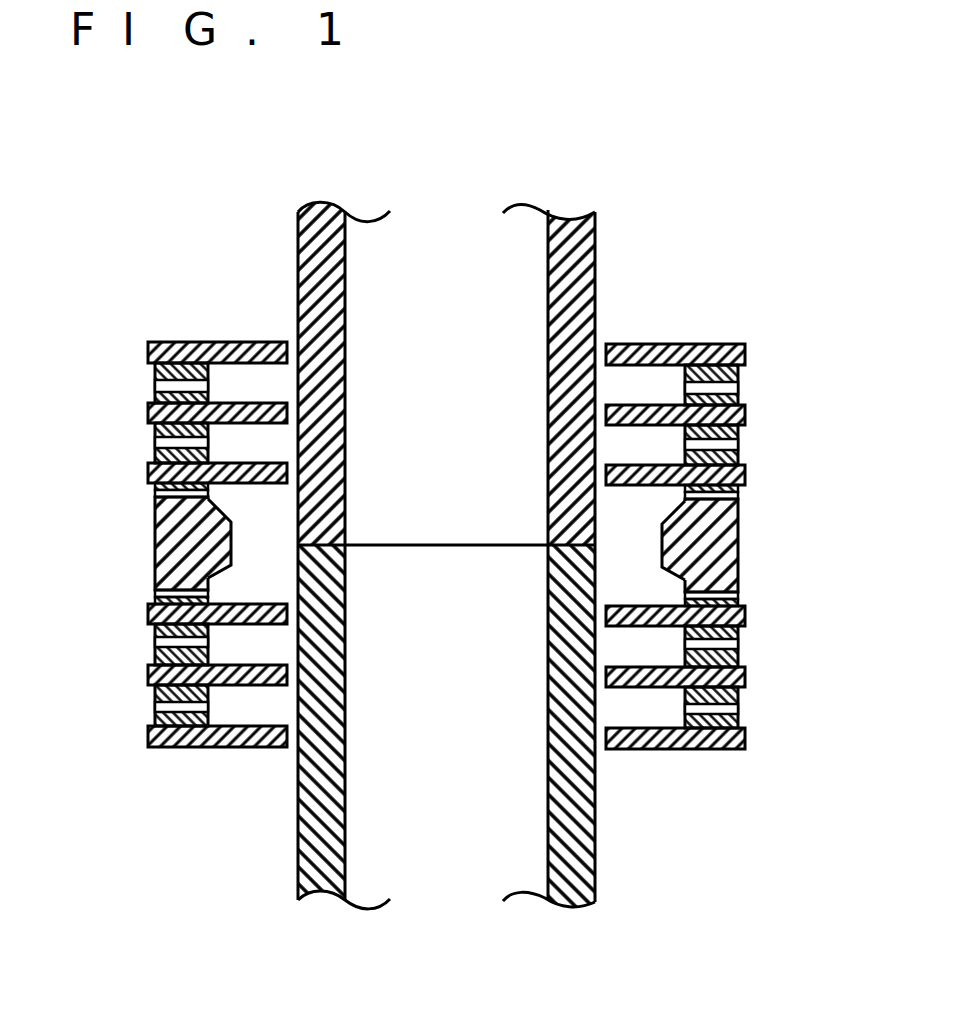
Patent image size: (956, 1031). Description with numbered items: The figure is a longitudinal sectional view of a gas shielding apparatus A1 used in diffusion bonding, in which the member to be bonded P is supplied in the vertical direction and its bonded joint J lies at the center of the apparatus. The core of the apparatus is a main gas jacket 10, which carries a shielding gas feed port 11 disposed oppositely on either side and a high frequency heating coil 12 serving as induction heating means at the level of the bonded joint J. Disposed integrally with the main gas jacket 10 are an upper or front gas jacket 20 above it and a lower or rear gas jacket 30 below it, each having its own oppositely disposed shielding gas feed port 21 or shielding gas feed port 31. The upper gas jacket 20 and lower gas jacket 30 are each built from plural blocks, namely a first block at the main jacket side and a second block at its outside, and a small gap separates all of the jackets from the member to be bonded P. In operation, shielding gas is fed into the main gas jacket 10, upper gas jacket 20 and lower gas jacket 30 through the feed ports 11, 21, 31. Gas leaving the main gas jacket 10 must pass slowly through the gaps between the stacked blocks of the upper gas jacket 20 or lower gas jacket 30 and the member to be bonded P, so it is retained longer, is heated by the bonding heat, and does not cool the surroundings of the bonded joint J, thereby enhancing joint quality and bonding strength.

The gas shielding apparatus A1 is at (750, 308).
The member to be bonded P is at (595, 278).
The bonded joint J is at (437, 547).
The main gas jacket 10 is at (416, 544).
The shielding gas feed port 11 is at (155, 492).
The high frequency heating coil 12 is at (155, 548).
The upper gas jacket 20 is at (477, 413).
The shielding gas feed port 21 is at (155, 385).
The lower gas jacket 30 is at (480, 676).
The shielding gas feed port 31 is at (155, 645).